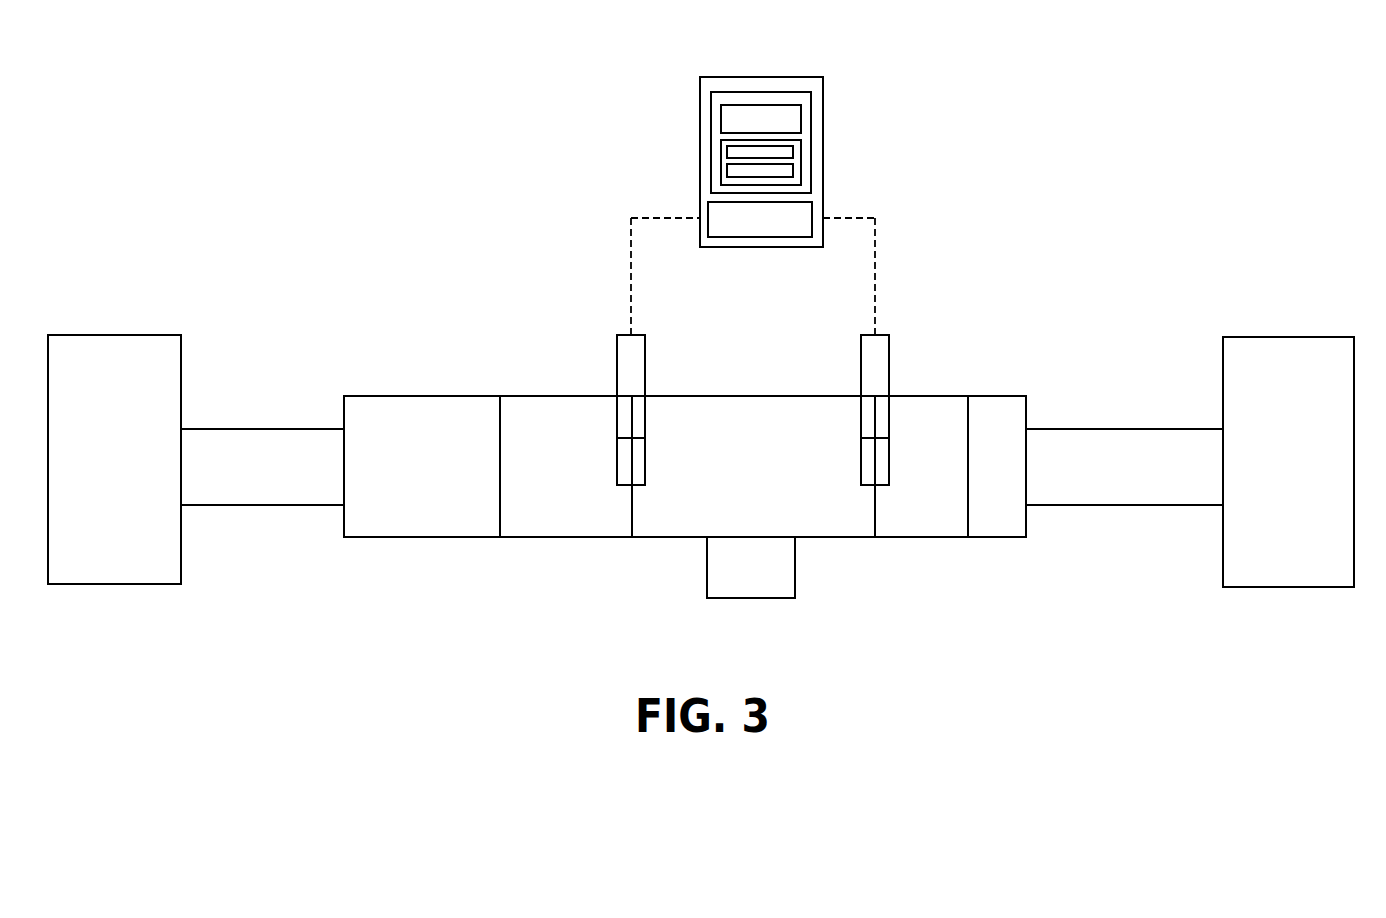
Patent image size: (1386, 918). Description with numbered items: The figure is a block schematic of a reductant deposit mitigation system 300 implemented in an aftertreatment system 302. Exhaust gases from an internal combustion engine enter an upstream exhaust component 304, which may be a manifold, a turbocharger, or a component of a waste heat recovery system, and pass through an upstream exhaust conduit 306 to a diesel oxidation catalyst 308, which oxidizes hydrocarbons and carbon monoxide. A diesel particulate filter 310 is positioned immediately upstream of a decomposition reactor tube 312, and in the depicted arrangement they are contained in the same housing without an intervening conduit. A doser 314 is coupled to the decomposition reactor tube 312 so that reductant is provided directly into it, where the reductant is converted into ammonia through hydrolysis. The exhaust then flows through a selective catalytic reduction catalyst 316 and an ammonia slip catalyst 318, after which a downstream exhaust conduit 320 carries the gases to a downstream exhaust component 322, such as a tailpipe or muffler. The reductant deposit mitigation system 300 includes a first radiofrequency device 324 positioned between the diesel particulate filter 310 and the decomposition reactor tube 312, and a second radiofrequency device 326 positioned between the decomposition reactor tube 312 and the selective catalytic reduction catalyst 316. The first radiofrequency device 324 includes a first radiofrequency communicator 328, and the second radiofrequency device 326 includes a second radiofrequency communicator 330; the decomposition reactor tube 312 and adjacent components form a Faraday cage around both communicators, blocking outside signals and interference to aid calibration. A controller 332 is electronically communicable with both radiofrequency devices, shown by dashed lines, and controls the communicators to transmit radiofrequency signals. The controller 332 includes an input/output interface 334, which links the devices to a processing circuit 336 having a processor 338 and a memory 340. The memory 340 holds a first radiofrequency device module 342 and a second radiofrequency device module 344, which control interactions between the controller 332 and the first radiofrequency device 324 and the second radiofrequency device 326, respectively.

The reductant deposit mitigation system 300 is at (1043, 93).
The aftertreatment system 302 is at (263, 277).
The upstream exhaust component 304 is at (130, 335).
The upstream exhaust conduit 306 is at (236, 505).
The diesel oxidation catalyst 308 is at (415, 396).
The diesel particulate filter 310 is at (535, 537).
The decomposition reactor tube 312 is at (712, 396).
The doser 314 is at (740, 598).
The selective catalytic reduction catalyst 316 is at (936, 537).
The ammonia slip catalyst 318 is at (995, 396).
The downstream exhaust conduit 320 is at (1079, 505).
The downstream exhaust component 322 is at (1252, 337).
The first radiofrequency device 324 is at (617, 352).
The second radiofrequency device 326 is at (861, 353).
The first radiofrequency communicator 328 is at (617, 467).
The second radiofrequency communicator 330 is at (861, 466).
The controller 332 is at (711, 77).
The input/output interface 334 is at (812, 212).
The processing circuit 336 is at (711, 103).
The processor 338 is at (801, 112).
The memory 340 is at (801, 150).
The first radiofrequency device module 342 is at (727, 152).
The second radiofrequency device module 344 is at (727, 172).